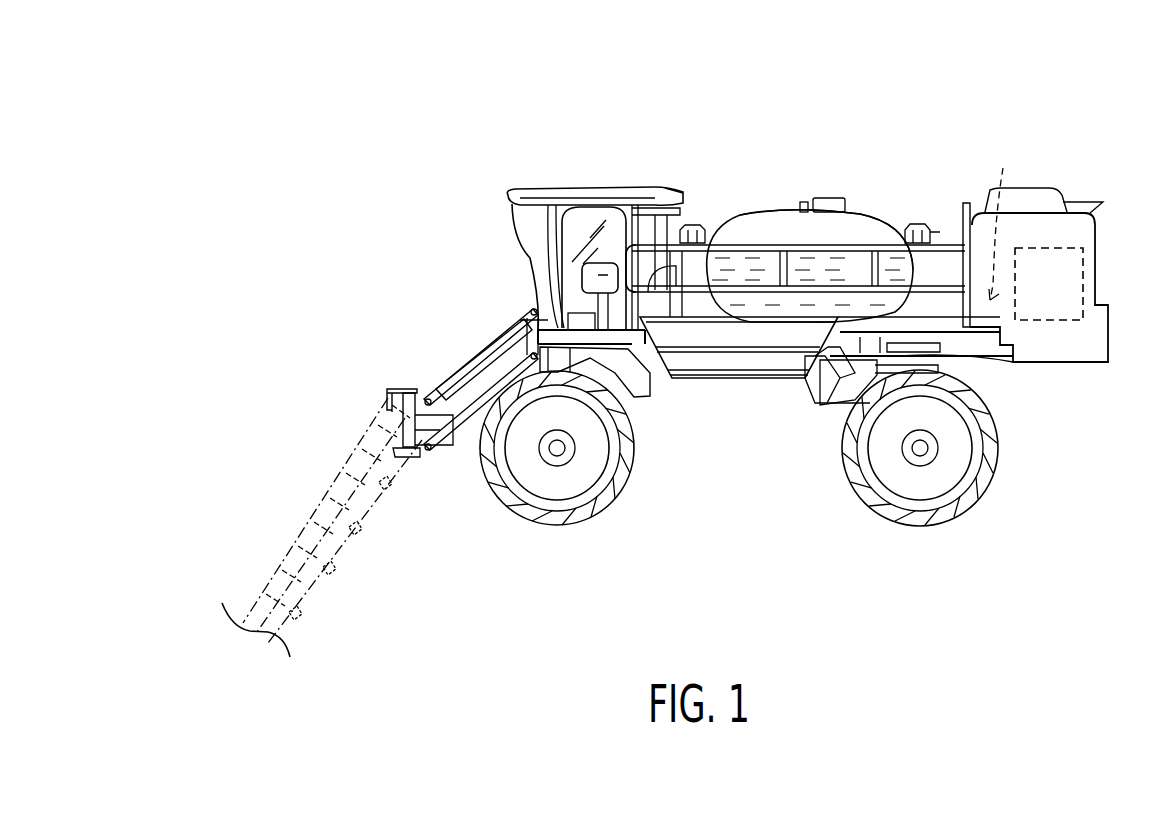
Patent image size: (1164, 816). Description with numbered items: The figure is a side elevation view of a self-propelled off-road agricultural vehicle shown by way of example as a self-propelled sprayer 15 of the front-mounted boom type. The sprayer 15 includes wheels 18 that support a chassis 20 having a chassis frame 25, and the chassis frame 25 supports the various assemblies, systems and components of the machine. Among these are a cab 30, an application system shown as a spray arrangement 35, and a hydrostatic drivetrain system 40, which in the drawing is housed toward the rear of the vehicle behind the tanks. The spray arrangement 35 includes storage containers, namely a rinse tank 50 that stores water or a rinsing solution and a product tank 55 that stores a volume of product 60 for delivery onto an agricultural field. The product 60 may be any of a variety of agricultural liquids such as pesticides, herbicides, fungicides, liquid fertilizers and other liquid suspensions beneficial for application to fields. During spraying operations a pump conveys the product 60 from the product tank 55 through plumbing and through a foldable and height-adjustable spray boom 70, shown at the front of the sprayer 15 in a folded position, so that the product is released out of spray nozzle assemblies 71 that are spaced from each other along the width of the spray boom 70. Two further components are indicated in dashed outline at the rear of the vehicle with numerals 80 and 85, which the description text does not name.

The sprayer 15 is at (852, 80).
The wheels 18 is at (600, 513).
The chassis 20 is at (758, 380).
The chassis frame 25 is at (815, 395).
The cab 30 is at (597, 187).
The spray arrangement 35 is at (882, 200).
The hydrostatic drivetrain system 40 is at (1022, 333).
The rinse tank 50 is at (923, 222).
The product tank 55 is at (770, 207).
The product 60 is at (738, 263).
The spray boom 70 is at (262, 535).
The spray nozzle assemblies 71 is at (340, 588).
The controller 80 is at (1060, 265).
The control system 85 is at (1004, 220).